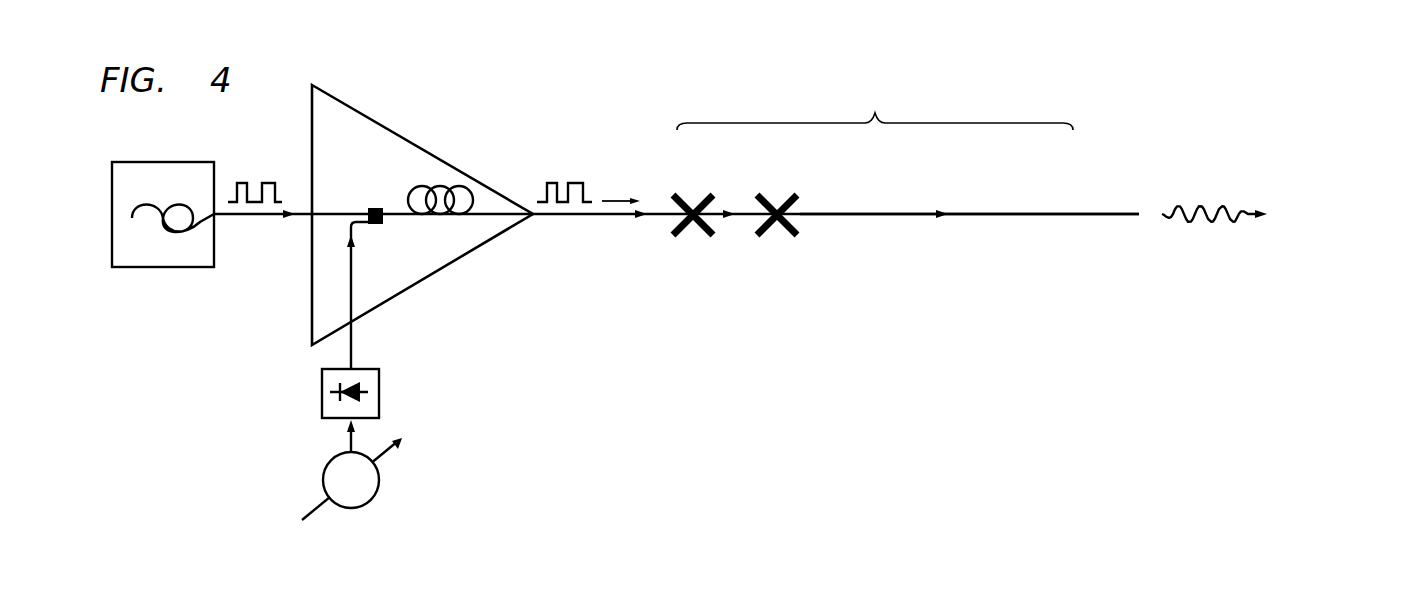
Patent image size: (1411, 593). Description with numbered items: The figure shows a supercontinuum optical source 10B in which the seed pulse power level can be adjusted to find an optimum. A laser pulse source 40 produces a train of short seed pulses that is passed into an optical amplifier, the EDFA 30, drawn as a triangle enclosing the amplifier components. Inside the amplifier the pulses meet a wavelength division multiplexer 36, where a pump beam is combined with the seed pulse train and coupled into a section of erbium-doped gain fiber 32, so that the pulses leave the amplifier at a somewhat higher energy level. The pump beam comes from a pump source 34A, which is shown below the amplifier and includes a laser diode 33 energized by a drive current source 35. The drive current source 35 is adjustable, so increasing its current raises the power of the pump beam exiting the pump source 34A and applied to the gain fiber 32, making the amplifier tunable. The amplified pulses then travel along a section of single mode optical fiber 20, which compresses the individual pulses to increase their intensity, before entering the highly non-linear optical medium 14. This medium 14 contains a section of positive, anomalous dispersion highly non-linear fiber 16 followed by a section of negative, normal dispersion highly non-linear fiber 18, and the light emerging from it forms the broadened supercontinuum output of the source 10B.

The laser pulse source 40 is at (160, 162).
The EDFA 30 is at (387, 125).
The gain fiber 32 is at (433, 186).
The wavelength division multiplexer 36 is at (368, 209).
The pump source 34A is at (322, 391).
The laser diode 33 is at (363, 388).
The drive current source 35 is at (323, 478).
The single mode optical fiber 20 is at (581, 217).
The positive dispersion highly non-linear fiber 16 is at (748, 217).
The negative dispersion HNLF 18 is at (992, 217).
The highly non-linear optical medium 14 is at (887, 105).
The SC optical source 10B is at (1160, 133).